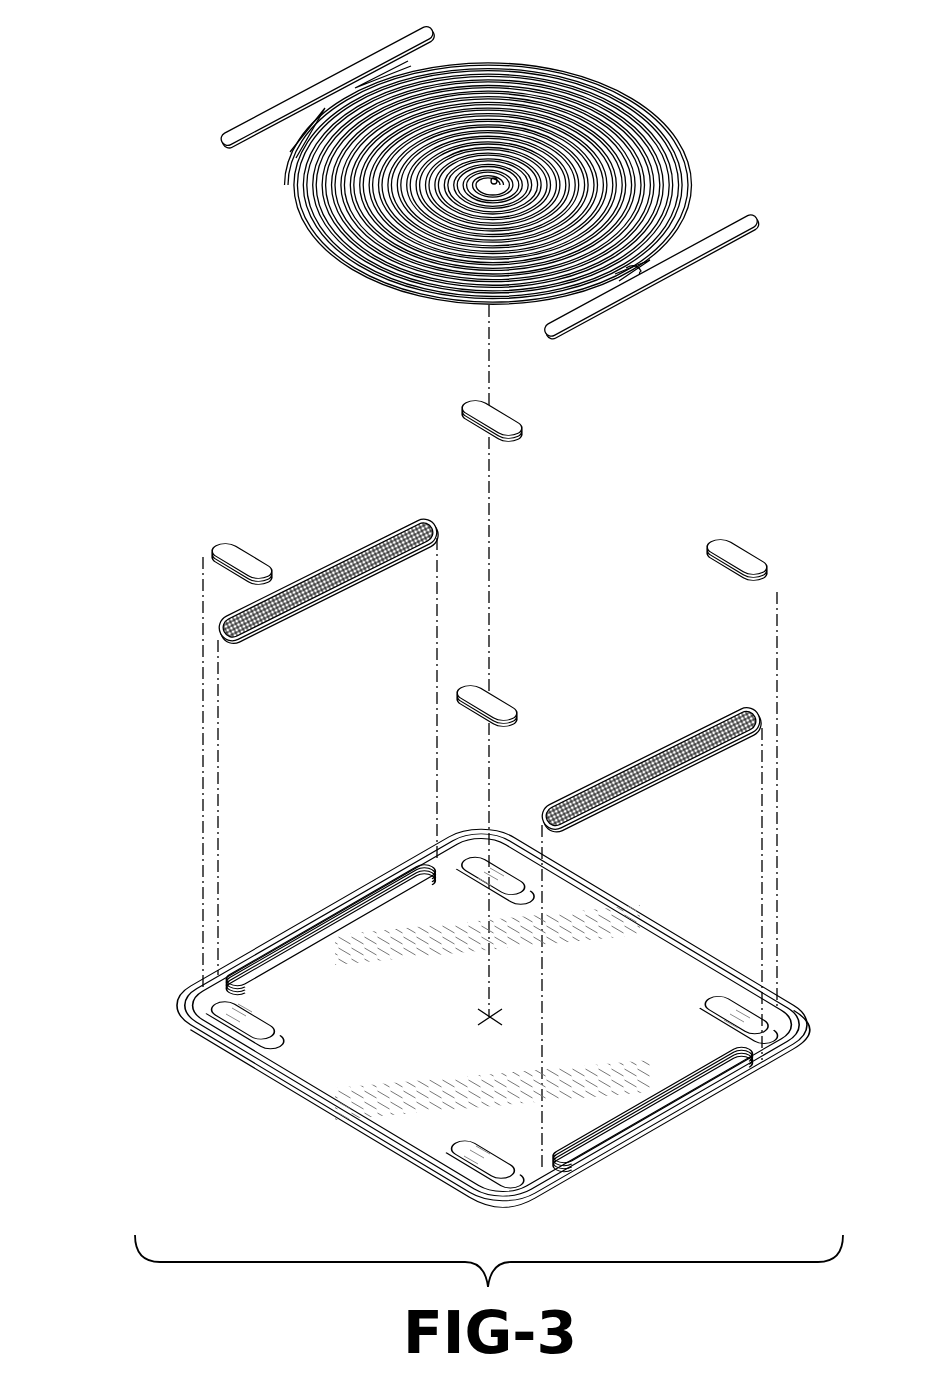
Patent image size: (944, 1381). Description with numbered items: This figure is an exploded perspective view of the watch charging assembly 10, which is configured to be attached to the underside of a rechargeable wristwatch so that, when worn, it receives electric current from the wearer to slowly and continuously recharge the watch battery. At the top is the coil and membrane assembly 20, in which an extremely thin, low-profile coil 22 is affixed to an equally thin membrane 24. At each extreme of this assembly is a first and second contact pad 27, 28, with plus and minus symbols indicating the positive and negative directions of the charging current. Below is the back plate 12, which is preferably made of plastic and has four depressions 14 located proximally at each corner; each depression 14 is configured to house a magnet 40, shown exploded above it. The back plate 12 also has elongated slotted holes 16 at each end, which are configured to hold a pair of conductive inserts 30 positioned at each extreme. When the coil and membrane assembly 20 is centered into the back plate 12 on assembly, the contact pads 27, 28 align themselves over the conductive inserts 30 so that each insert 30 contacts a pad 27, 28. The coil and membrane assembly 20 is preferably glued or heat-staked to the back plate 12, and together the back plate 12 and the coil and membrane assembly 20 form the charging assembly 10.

The watch charging assembly 10 is at (96, 300).
The back plate 12 is at (352, 1122).
The depressions 14 is at (486, 866).
The elongated slotted holes 16 is at (322, 936).
The coil and membrane assembly 20 is at (600, 75).
The coil 22 is at (370, 256).
The membrane 24 is at (676, 148).
The first contact pad 27 is at (333, 88).
The second contact pad 28 is at (702, 250).
The conductive inserts 30 is at (342, 556).
The magnet 40 is at (488, 410).